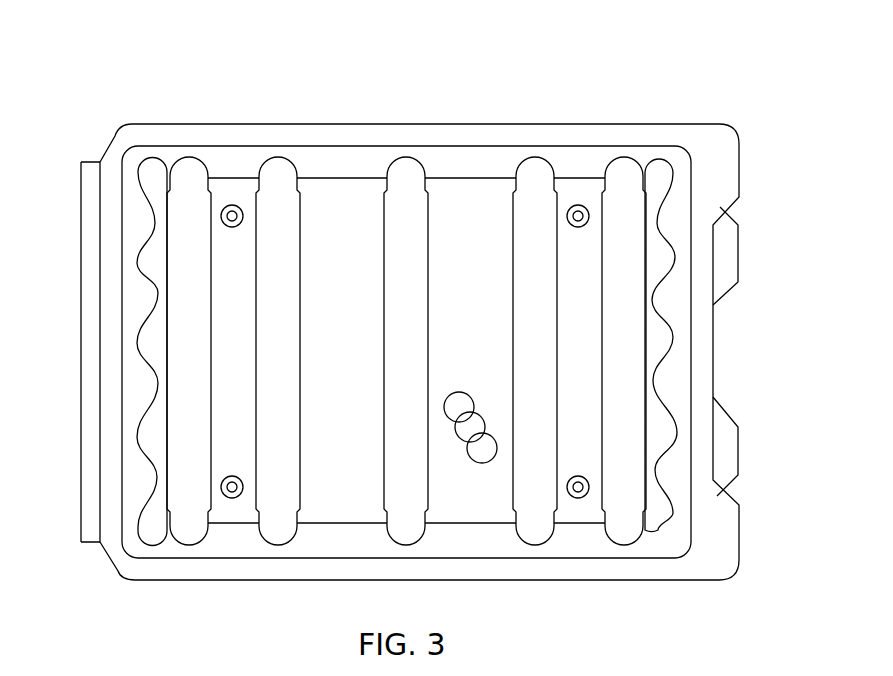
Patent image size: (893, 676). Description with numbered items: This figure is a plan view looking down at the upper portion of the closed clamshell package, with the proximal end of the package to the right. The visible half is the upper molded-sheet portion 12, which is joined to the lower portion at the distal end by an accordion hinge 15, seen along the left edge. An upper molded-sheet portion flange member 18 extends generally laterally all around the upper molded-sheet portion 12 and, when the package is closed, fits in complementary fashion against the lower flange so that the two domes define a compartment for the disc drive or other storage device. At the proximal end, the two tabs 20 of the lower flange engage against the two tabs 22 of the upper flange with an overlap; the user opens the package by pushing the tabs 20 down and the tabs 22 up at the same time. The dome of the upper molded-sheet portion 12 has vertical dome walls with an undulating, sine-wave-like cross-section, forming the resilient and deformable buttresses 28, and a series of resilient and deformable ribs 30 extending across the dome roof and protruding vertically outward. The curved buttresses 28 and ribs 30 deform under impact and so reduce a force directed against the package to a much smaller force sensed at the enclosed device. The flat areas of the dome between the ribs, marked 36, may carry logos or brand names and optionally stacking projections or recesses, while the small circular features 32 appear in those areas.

The upper molded-sheet portion 12 is at (118, 110).
The accordion hinge 15 is at (90, 532).
The upper molded-sheet portion flange member 18 is at (155, 580).
The tabs 20 is at (739, 254).
The tabs 22 is at (735, 178).
The buttresses 28 is at (160, 318).
The ribs 30 is at (207, 318).
The holes 32 is at (232, 205).
The flat portions between channels 36 is at (253, 318).